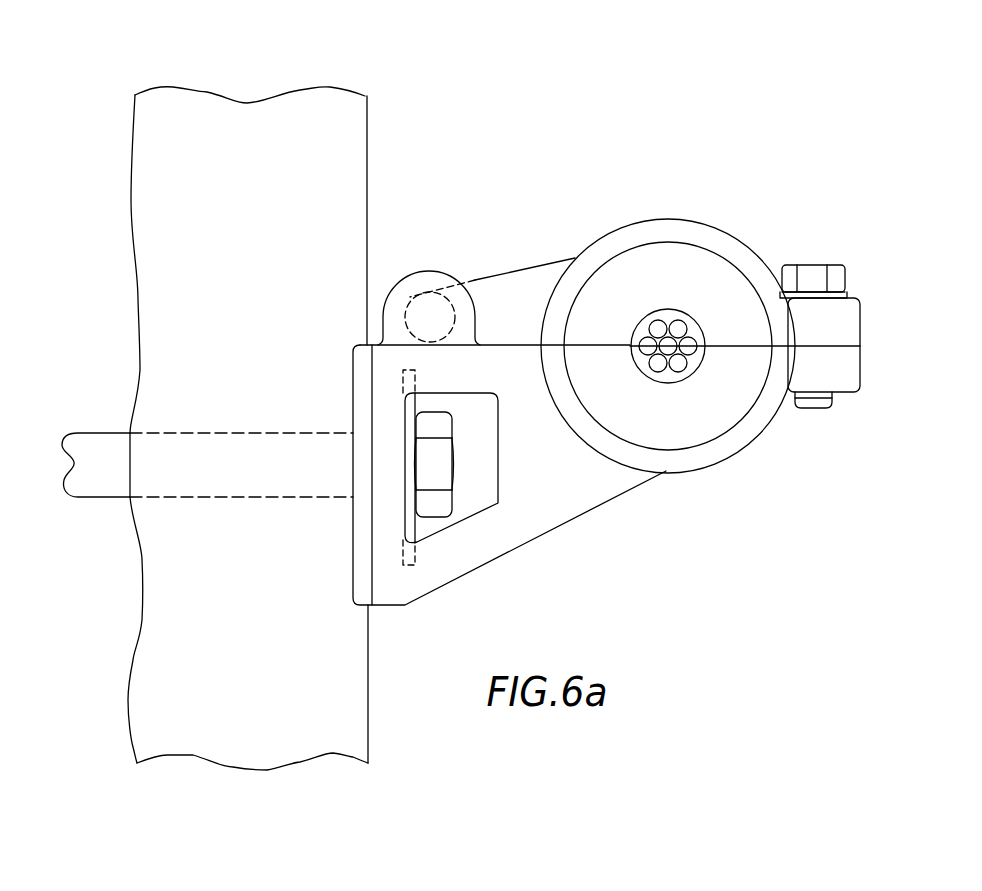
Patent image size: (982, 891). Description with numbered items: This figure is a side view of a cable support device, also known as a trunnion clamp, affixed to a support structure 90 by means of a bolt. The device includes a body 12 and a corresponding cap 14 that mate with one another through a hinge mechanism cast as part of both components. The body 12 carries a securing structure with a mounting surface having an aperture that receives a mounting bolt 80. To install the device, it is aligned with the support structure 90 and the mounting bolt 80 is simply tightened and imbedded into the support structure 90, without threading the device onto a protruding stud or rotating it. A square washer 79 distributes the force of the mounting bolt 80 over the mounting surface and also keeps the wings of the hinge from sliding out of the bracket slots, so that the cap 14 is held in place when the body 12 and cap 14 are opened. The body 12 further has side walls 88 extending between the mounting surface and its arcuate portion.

The body 12 is at (712, 452).
The cap 14 is at (673, 228).
The square washer 79 is at (412, 522).
The mounting bolt 80 is at (440, 470).
The side walls 88 is at (565, 505).
The support structure 90 is at (150, 207).